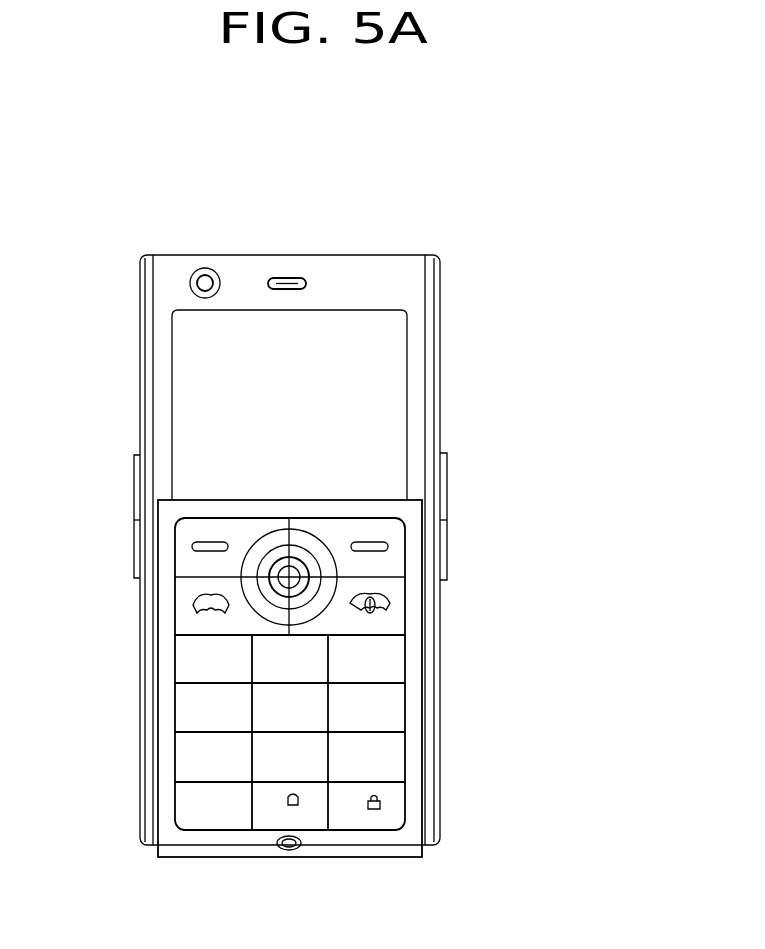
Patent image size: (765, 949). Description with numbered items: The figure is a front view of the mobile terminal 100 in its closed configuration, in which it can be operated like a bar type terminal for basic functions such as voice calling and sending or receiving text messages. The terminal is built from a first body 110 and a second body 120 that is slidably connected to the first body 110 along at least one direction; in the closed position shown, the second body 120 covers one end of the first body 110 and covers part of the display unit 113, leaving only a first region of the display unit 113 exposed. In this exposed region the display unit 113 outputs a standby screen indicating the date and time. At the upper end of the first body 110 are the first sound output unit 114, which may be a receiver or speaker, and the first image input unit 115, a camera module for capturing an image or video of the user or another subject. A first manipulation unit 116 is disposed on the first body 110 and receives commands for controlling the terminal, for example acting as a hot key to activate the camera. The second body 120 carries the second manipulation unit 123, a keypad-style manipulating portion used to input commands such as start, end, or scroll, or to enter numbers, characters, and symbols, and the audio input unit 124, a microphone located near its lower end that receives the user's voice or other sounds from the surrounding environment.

The mobile terminal 100 is at (527, 235).
The first body 110 is at (132, 365).
The display unit 113 is at (180, 430).
The first sound output unit 114 is at (287, 278).
The first image input unit 115 is at (205, 268).
The first manipulation unit 116 is at (447, 548).
The second body 120 is at (150, 630).
The second manipulation unit 123 is at (190, 710).
The audio input unit 124 is at (289, 862).